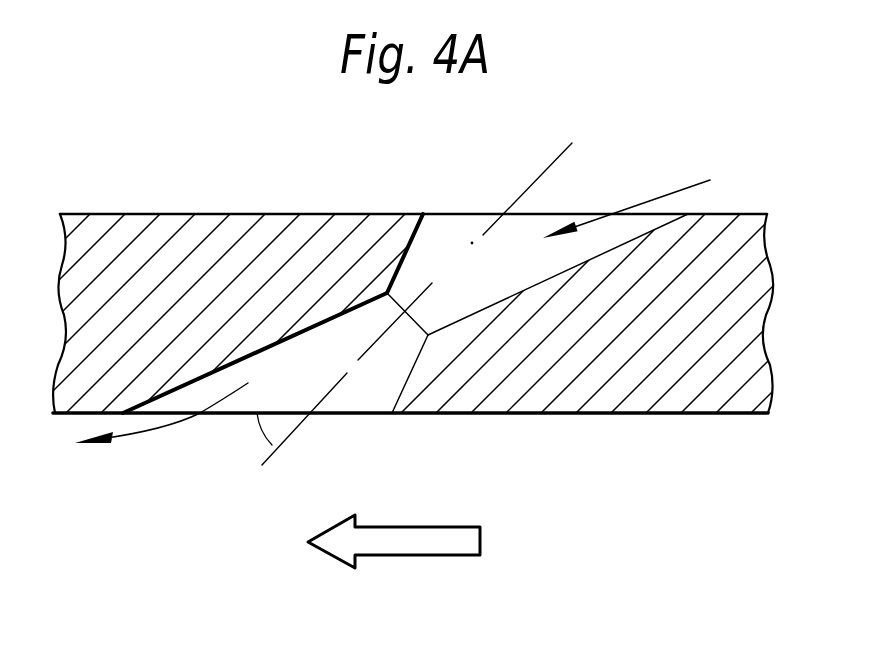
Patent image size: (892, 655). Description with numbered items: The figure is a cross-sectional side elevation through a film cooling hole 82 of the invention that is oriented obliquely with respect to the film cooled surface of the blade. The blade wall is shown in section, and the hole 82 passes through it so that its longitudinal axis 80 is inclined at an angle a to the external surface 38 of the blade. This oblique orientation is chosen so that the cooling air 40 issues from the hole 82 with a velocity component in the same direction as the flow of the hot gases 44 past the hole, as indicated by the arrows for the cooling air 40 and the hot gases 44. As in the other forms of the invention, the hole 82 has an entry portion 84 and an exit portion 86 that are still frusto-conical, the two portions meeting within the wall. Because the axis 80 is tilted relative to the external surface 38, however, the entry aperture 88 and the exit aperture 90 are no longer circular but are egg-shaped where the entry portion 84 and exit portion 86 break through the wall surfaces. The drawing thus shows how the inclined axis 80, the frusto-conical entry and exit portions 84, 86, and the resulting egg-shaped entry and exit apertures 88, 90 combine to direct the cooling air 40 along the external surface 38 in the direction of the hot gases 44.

The external surface 38 is at (593, 413).
The cooling air 40 is at (668, 190).
The hot gases 44 is at (427, 542).
The longitudinal axis 80 is at (291, 429).
The hole 82 is at (203, 425).
The entry portion 84 is at (415, 235).
The exit portion 86 is at (410, 378).
The entry aperture 88 is at (476, 217).
The exit aperture 90 is at (223, 417).